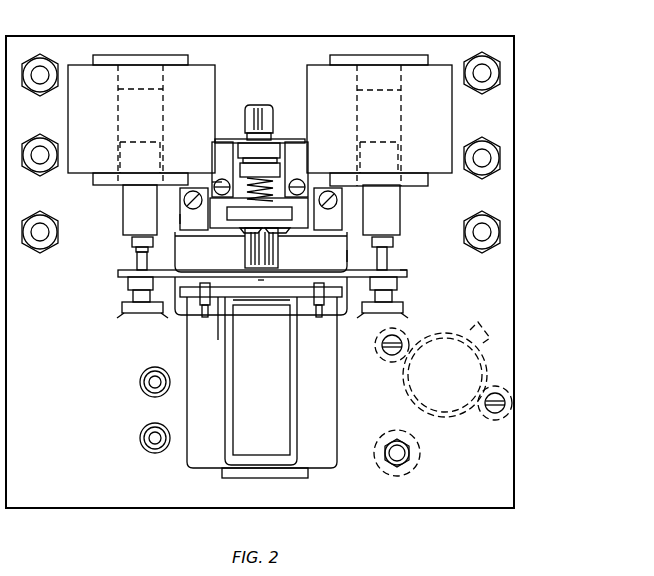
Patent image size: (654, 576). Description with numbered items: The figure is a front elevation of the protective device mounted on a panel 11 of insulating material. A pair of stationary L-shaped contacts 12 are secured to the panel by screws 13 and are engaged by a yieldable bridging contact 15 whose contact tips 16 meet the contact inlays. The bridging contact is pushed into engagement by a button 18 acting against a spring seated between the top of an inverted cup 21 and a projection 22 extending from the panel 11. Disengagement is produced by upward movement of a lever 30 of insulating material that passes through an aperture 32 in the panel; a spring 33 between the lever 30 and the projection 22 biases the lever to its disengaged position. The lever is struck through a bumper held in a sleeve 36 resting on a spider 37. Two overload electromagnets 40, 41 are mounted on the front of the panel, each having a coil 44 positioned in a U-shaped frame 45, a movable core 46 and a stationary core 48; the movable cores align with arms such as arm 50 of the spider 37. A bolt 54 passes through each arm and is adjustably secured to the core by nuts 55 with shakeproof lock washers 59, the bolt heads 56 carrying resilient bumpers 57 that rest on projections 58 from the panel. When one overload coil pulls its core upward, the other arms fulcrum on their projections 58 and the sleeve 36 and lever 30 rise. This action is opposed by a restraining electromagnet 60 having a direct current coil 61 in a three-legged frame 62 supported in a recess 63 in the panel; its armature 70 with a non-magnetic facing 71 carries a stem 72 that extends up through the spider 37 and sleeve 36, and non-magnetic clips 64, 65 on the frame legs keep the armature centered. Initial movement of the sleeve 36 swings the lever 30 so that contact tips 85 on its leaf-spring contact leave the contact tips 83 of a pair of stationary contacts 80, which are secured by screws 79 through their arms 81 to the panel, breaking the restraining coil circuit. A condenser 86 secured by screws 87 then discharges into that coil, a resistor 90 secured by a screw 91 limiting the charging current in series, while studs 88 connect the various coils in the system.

The panel 11 is at (514, 112).
The stationary L-shaped contacts 12 is at (202, 150).
The screws 13 is at (222, 182).
The bridging contact 15 is at (278, 139).
The contact tips 16 is at (307, 142).
The button 18 is at (256, 105).
The inverted cup 21 is at (246, 146).
The projection 22 is at (282, 170).
The lever 30 is at (292, 211).
The aperture 32 is at (347, 256).
The spring 33 is at (247, 188).
The sleeve 36 is at (278, 257).
The spider 37 is at (407, 273).
The overload electromagnet 40 is at (141, 119).
The overload electromagnet 41 is at (379, 125).
The coil 44 is at (68, 118).
The U-shaped frame 45 is at (188, 58).
The movable core 46 is at (123, 200).
The stationary core 48 is at (125, 98).
The arm 50 is at (118, 273).
The bolt 54 is at (137, 256).
The nuts 55 is at (134, 243).
The bolt heads 56 is at (128, 283).
The resilient bumpers 57 is at (128, 297).
The projections 58 is at (138, 314).
The shakeproof lock washers 59 is at (132, 240).
The restraining electromagnet 60 is at (262, 382).
The direct current coil 61 is at (240, 350).
The three-legged frame 62 is at (236, 407).
The recess 63 is at (226, 472).
The non-magnetic clip 64 is at (205, 308).
The non-magnetic clip 65 is at (319, 308).
The armature 70 is at (296, 290).
The non-magnetic facing 71 is at (219, 300).
The stem 72 is at (262, 283).
The screws 79 is at (184, 196).
The stationary contacts 80 is at (222, 237).
The arms 81 is at (180, 218).
The contact tips 83 is at (250, 233).
The contact tips 85 is at (282, 233).
The condenser 86 is at (401, 385).
The screws 87 is at (382, 352).
The studs 88 is at (496, 70).
The resistor 90 is at (420, 454).
The screw 91 is at (405, 446).